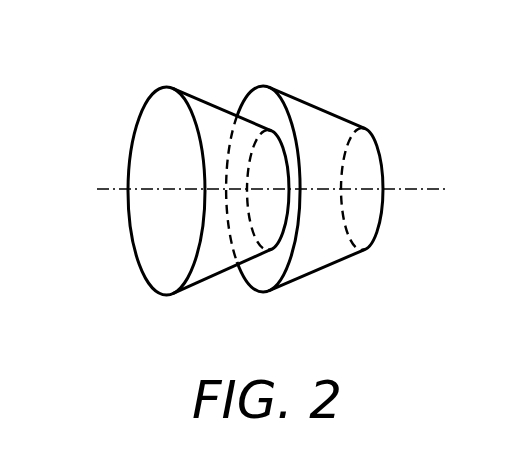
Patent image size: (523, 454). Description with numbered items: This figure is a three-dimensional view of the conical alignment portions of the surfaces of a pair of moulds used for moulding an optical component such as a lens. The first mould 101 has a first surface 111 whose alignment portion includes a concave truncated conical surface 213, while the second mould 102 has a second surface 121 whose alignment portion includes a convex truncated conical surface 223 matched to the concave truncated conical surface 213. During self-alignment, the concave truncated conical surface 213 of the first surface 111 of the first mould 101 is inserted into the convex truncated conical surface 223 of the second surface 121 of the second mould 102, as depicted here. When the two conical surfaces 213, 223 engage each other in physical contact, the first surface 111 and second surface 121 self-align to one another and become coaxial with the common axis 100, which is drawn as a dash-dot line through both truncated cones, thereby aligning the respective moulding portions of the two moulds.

The common axis 100 is at (433, 190).
The first mould 101 is at (181, 166).
The second mould 102 is at (337, 168).
The first surface 111 is at (120, 126).
The second surface 121 is at (404, 161).
The concave truncated conical surface 213 is at (196, 99).
The convex truncated conical surface 223 is at (307, 102).